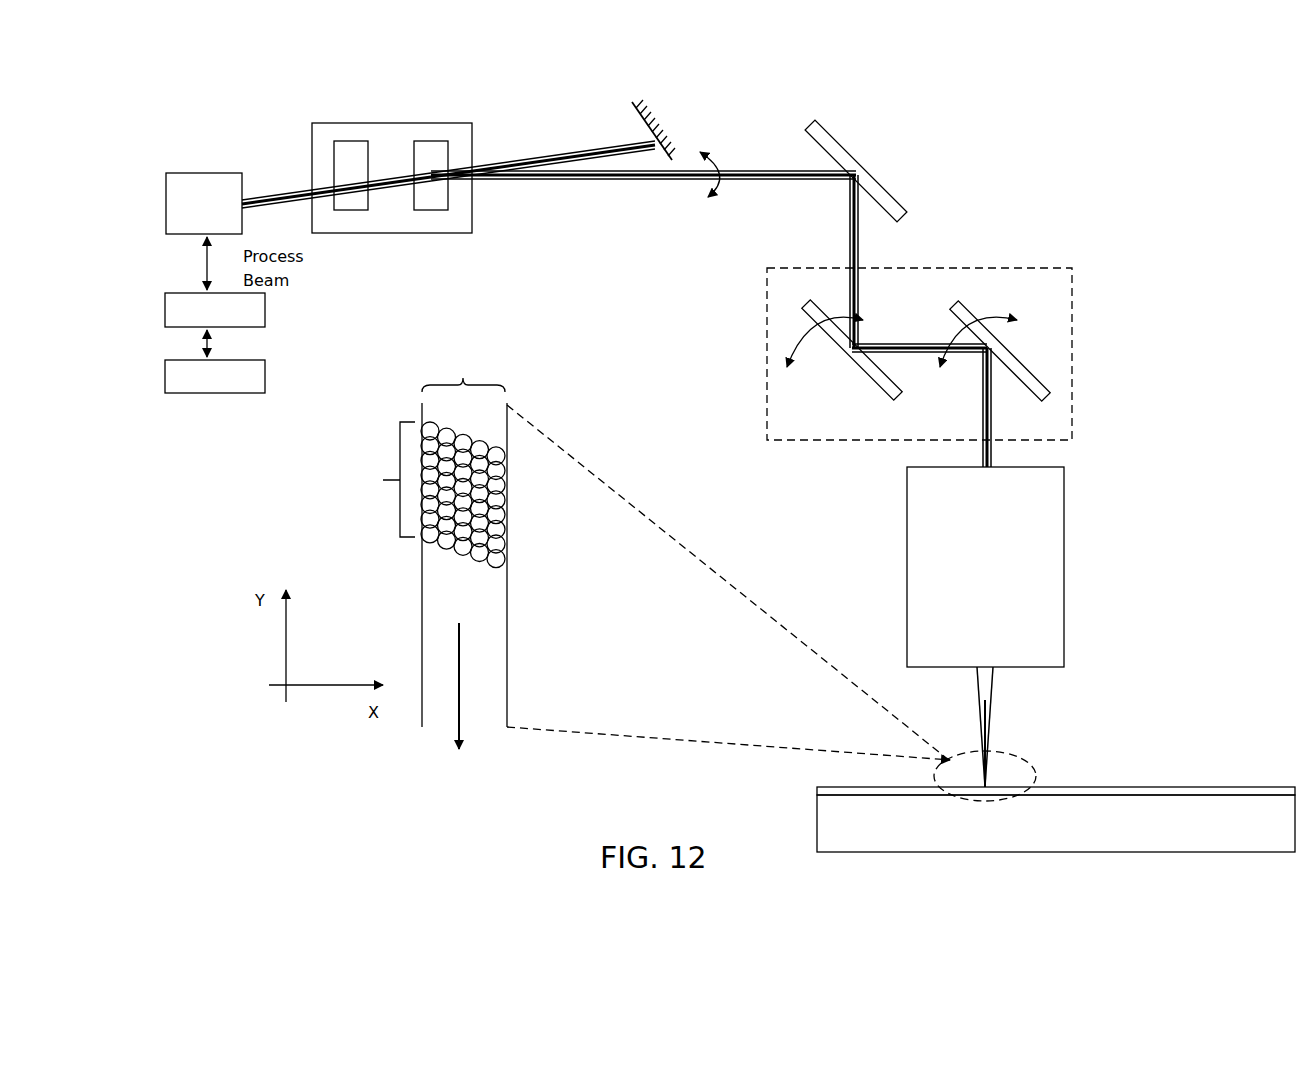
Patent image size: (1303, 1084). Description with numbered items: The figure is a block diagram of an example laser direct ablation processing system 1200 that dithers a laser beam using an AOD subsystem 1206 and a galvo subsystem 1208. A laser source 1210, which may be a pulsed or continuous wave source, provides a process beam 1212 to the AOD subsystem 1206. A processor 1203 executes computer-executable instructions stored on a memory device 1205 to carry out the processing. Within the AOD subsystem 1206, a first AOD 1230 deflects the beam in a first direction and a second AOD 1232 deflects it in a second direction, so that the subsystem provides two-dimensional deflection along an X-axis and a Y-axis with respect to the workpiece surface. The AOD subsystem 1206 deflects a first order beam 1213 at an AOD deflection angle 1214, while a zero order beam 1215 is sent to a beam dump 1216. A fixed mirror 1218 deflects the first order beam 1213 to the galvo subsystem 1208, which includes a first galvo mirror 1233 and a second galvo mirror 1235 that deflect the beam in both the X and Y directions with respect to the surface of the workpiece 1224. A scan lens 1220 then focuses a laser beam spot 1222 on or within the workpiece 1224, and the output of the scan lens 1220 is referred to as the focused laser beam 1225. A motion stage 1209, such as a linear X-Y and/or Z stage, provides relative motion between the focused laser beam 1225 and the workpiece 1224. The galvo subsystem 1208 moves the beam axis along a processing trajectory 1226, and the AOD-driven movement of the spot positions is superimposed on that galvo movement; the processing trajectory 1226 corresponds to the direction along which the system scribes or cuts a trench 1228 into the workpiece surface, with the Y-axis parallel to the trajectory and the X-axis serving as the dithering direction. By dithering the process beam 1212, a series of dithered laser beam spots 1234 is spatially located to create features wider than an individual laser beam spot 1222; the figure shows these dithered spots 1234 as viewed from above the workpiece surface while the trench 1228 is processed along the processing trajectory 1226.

The LDA processing system 1200 is at (290, 68).
The laser source 1210 is at (218, 173).
The process beam 1212 is at (292, 195).
The AOD subsystem 1206 is at (472, 123).
The first AOD 1230 is at (353, 210).
The second AOD 1232 is at (428, 210).
The zero order beam 1215 is at (538, 152).
The beam dump 1216 is at (662, 120).
The first order beam 1213 is at (615, 178).
The AOD deflection angle 1214 is at (693, 213).
The fixed mirror 1218 is at (830, 135).
The galvo subsystem 1208 is at (1072, 268).
The first galvo mirror 1233 is at (862, 367).
The second galvo mirror 1235 is at (968, 315).
The scan lens 1220 is at (1064, 478).
The focused laser beam 1225 is at (993, 690).
The laser beam spot 1222 is at (989, 785).
The workpiece 1224 is at (1210, 787).
The motion stage 1209 is at (1272, 836).
The processor 1203 is at (266, 308).
The memory device 1205 is at (266, 374).
The trench 1228 is at (686, 556).
The dithered laser beam spots 1234 is at (433, 560).
The processing trajectory 1226 is at (459, 668).